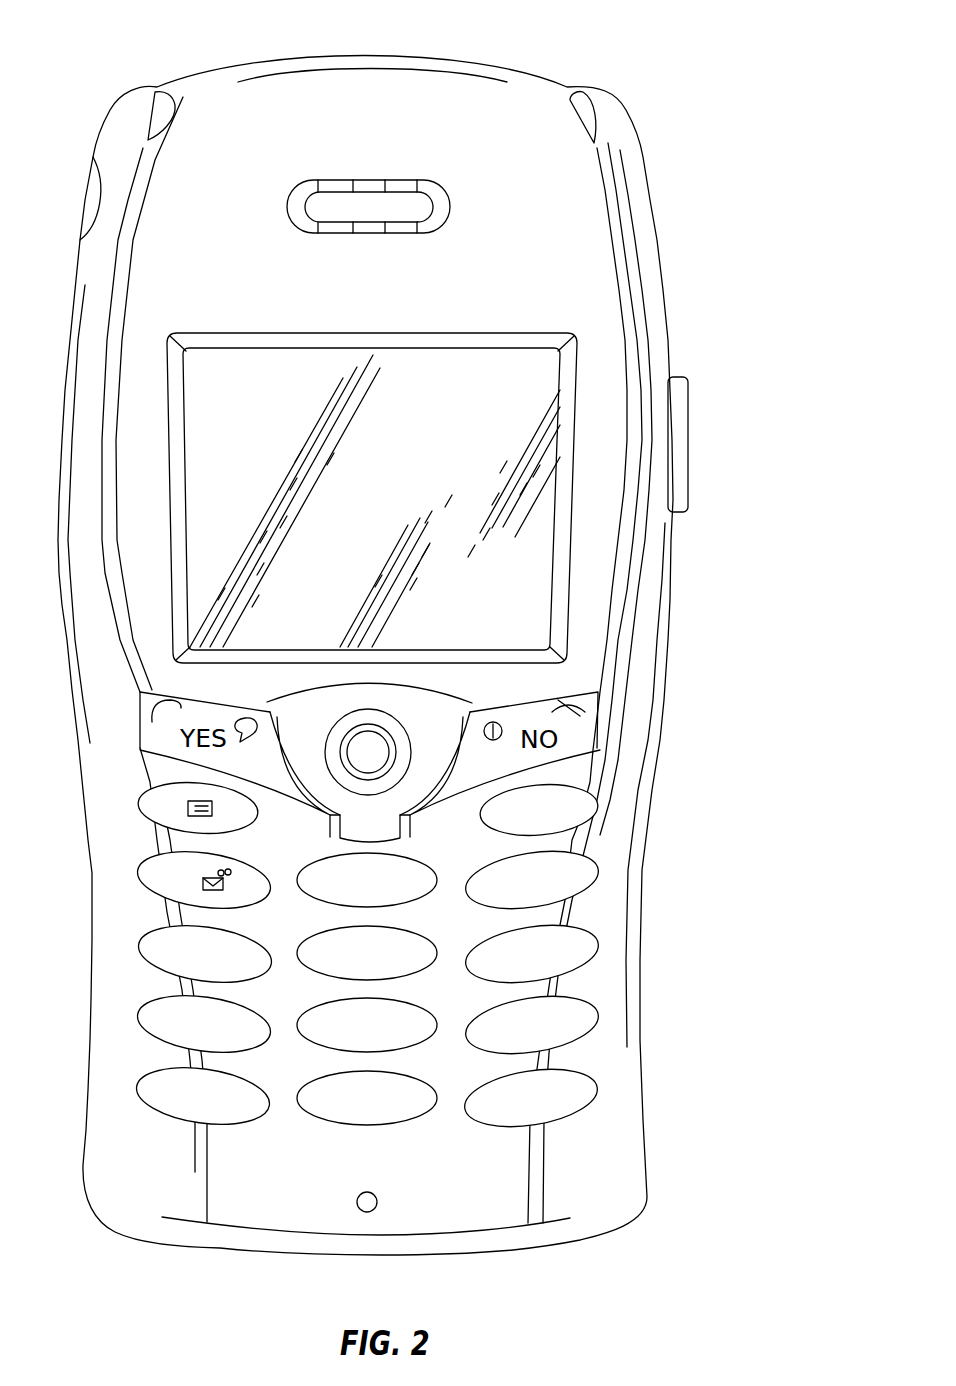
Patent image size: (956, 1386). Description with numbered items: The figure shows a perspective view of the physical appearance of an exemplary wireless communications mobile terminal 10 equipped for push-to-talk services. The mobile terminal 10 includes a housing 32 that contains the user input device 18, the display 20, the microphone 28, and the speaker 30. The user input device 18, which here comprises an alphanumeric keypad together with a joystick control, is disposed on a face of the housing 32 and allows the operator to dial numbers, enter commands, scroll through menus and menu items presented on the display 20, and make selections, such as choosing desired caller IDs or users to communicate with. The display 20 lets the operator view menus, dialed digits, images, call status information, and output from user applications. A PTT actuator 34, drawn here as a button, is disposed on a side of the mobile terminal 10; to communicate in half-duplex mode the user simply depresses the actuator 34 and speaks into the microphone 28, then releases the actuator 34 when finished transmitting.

The mobile terminal 10 is at (683, 70).
The housing 32 is at (273, 118).
The speaker 30 is at (362, 180).
The display 20 is at (545, 333).
The PTT actuator 34 is at (688, 415).
The user input device 18 is at (605, 858).
The microphone 28 is at (378, 1197).